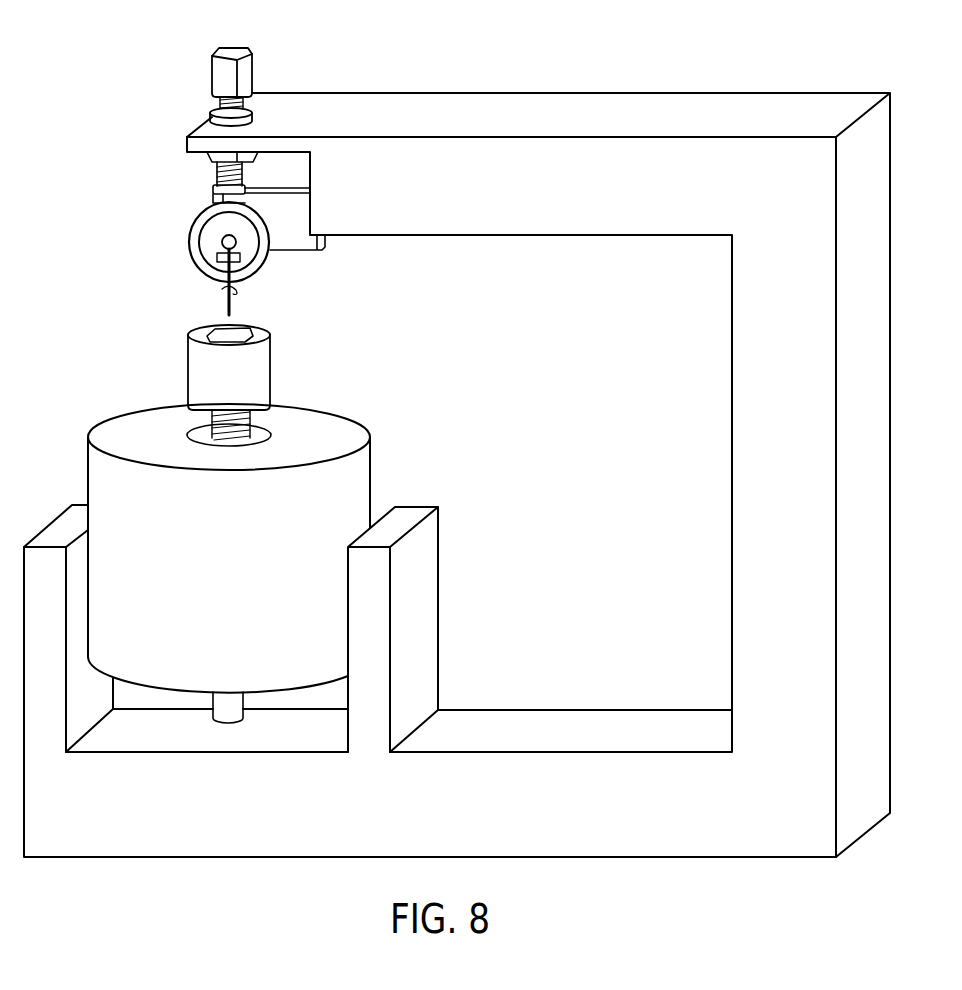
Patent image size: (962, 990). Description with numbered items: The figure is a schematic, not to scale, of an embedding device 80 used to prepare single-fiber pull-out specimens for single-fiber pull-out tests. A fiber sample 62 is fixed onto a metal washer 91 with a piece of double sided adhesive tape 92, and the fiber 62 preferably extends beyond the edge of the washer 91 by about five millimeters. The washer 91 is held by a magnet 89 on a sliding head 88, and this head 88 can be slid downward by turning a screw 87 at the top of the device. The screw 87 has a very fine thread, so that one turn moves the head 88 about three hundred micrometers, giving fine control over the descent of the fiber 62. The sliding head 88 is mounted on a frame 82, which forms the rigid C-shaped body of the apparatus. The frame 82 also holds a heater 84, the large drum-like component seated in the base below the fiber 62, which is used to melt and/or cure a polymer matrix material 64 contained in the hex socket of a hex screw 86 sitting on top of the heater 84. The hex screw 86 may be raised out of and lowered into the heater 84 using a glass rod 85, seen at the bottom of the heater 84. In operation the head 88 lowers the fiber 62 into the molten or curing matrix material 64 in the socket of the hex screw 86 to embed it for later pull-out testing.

The embedding device 80 is at (582, 70).
The frame 82 is at (758, 434).
The heater 84 is at (357, 488).
The glass rod 85 is at (232, 706).
The hex screw 86 is at (260, 365).
The polymer matrix material 64 is at (217, 333).
The fiber sample 62 is at (236, 292).
The screw 87 is at (220, 75).
The sliding head 88 is at (325, 246).
The magnet 89 is at (195, 232).
The metal washer 91 is at (207, 220).
The double sided adhesive tape 92 is at (217, 260).